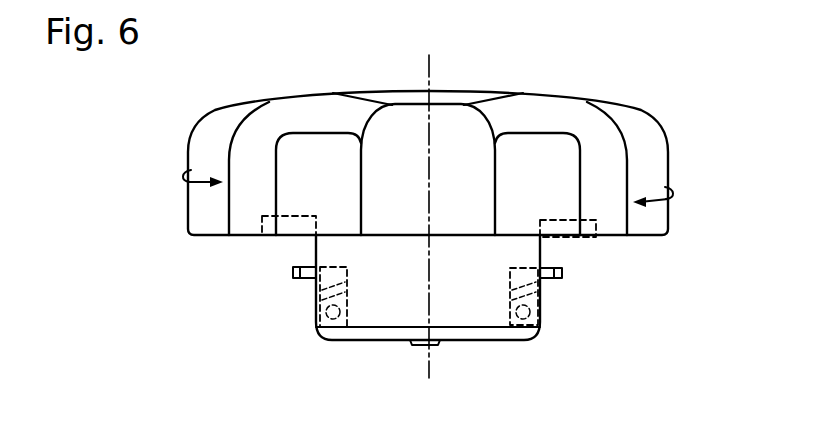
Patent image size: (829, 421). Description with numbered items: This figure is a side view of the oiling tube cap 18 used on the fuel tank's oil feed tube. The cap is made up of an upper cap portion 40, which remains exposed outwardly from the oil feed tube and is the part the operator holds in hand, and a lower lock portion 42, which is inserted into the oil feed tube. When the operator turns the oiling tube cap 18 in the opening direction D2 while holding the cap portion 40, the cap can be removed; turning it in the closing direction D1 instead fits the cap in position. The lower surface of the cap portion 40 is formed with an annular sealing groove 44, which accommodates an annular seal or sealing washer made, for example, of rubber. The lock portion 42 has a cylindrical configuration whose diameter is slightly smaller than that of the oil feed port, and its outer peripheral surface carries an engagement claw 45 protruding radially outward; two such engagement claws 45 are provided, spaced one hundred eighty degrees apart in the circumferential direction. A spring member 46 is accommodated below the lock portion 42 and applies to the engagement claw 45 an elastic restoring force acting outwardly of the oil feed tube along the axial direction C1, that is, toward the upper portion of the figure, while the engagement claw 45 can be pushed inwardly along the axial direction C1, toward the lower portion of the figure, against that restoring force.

The oiling tube cap 18 is at (637, 107).
The cap portion 40 is at (648, 172).
The lock portion 42 is at (385, 300).
The sealing groove 44 is at (280, 236).
The engagement claw 45 is at (293, 273).
The spring member 46 is at (543, 300).
The axial direction C1 is at (430, 70).
The closing direction D1 is at (676, 198).
The opening direction D2 is at (180, 181).